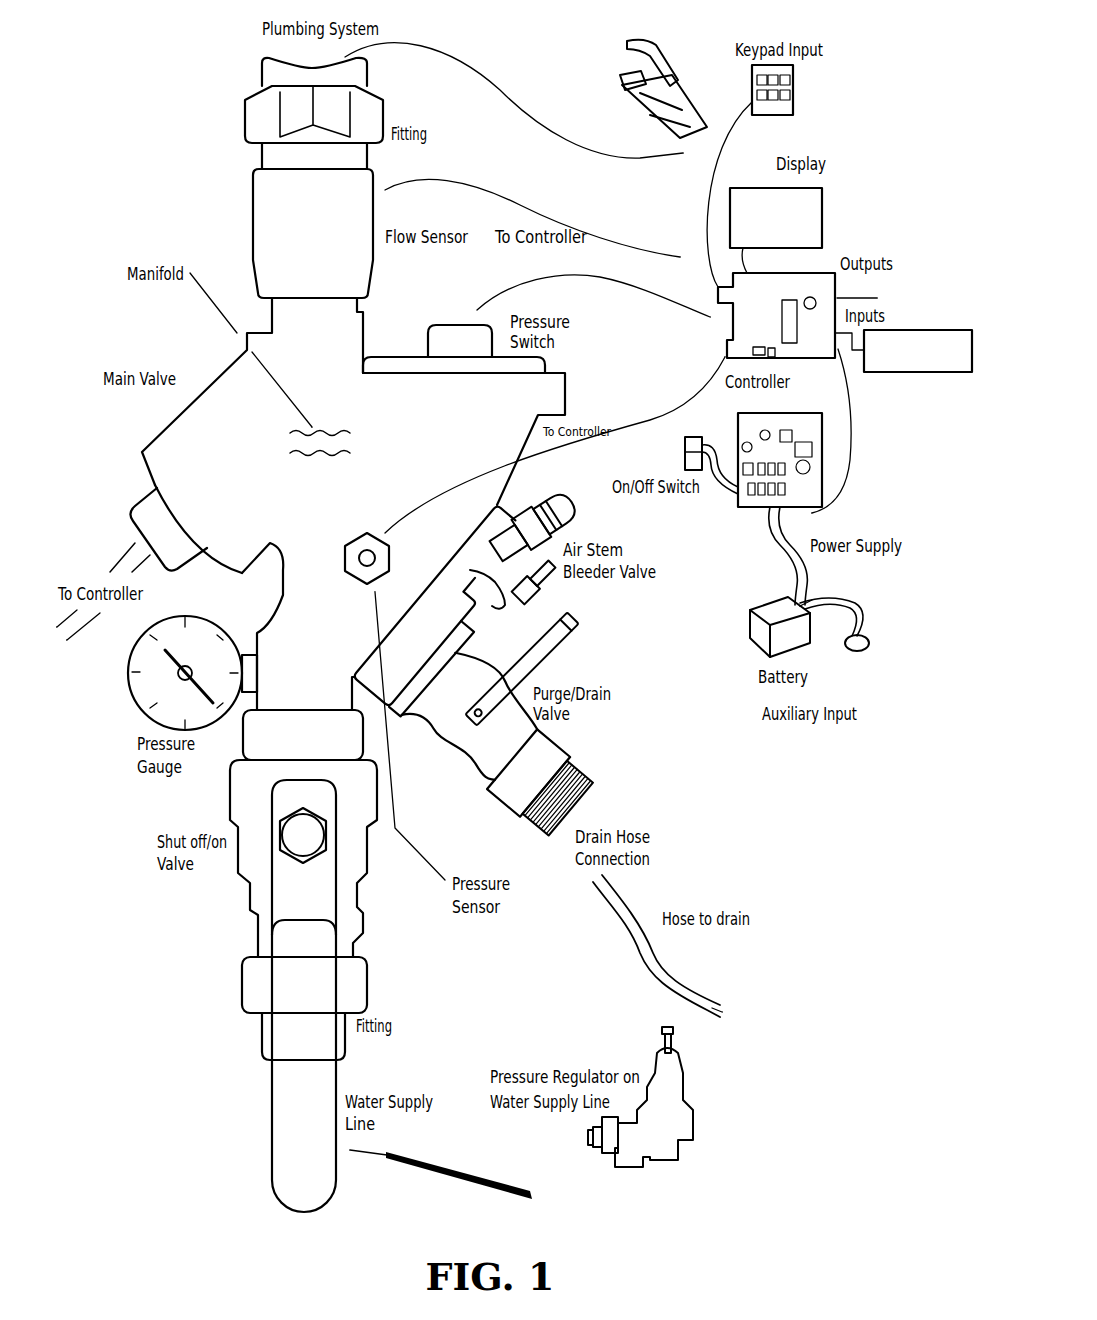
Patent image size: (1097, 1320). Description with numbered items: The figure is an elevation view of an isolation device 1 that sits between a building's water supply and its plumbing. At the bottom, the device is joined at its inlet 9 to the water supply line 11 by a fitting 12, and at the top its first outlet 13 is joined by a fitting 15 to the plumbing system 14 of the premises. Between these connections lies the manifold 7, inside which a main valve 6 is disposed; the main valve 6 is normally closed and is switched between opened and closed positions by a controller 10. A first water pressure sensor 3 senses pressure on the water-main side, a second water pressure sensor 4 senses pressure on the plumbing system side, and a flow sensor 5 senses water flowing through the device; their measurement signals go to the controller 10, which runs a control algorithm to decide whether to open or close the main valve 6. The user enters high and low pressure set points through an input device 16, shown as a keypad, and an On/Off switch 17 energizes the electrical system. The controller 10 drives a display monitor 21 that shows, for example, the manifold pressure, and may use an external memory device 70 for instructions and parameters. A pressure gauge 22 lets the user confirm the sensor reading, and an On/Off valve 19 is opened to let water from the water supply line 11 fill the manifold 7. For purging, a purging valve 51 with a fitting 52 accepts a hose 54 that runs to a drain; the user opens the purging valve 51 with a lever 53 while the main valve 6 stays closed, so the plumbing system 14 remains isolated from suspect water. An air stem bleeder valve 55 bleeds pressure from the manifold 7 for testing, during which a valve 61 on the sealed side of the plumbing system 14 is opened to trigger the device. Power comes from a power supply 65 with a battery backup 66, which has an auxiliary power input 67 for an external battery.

The isolation device 1 is at (184, 152).
The first water pressure sensor 3 is at (355, 540).
The second water pressure sensor 4 is at (493, 402).
The flow sensor 5 is at (330, 247).
The main valve 6 is at (248, 458).
The manifold 7 is at (230, 362).
The inlet 9 is at (262, 1070).
The controller 10 is at (812, 283).
The water supply line 11 is at (268, 1047).
The fitting 12 is at (357, 987).
The first outlet 13 is at (272, 160).
The plumbing system 14 is at (270, 78).
The fitting 15 is at (250, 117).
The input device 16 is at (795, 88).
The On/Off switch 17 is at (693, 433).
The On/Off valve 19 is at (300, 833).
The display monitor 21 is at (813, 202).
The pressure gauge 22 is at (140, 670).
The purging valve 51 is at (470, 713).
The fittings 52 is at (565, 803).
The lever 53 is at (577, 613).
The hose 54 is at (628, 897).
The air stem bleeder valve 55 is at (564, 501).
The valve 61 is at (680, 107).
The power supply 65 is at (788, 413).
The battery backup 66 is at (770, 610).
The auxiliary power input 67 is at (868, 645).
The external memory device 70 is at (920, 330).